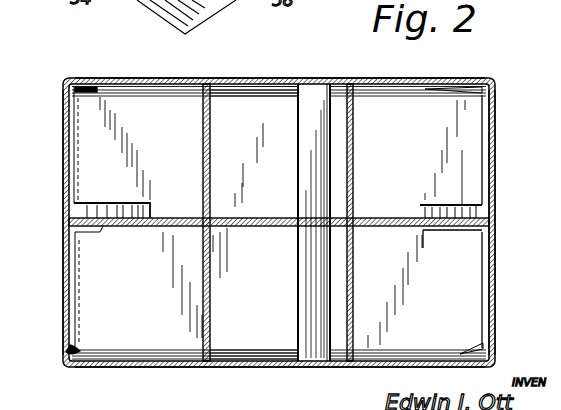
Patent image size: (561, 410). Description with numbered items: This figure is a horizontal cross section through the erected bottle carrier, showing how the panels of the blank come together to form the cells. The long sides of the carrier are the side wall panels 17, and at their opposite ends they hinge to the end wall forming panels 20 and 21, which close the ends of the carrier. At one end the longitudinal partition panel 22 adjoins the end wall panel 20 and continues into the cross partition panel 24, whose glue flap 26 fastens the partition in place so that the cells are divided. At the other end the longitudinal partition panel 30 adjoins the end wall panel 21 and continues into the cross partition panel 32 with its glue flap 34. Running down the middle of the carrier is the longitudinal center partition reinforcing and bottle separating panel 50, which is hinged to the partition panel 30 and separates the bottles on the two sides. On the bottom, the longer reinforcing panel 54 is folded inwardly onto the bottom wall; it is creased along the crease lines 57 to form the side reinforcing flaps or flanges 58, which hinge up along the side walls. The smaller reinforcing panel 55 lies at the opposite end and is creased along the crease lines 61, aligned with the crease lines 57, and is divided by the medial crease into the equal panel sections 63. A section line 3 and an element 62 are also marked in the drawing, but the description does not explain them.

The section line 3- 3 is at (364, 58).
The side wall panel 17 is at (239, 77).
The end wall forming panel 20 is at (65, 182).
The end wall forming panel 21 is at (495, 172).
The longitudinal partition panel 22 is at (159, 218).
The cross partition panel 24 is at (210, 157).
The glue flap 26 is at (173, 90).
The longitudinal partition panel 30 is at (389, 240).
The cross partition panel 32 is at (354, 163).
The glue flap 34 is at (384, 88).
The longitudinal center partition reinforcing and bottle separating panel 50 is at (448, 206).
The bottom forming reinforcing panel 54 is at (90, 288).
The bottom forming reinforcing panel 55 is at (462, 145).
The crease line 57 is at (232, 93).
The side reinforcing flap 58 is at (110, 86).
The crease line 61 is at (425, 93).
The retaining strip 62 is at (428, 88).
The panel section 63 is at (481, 306).